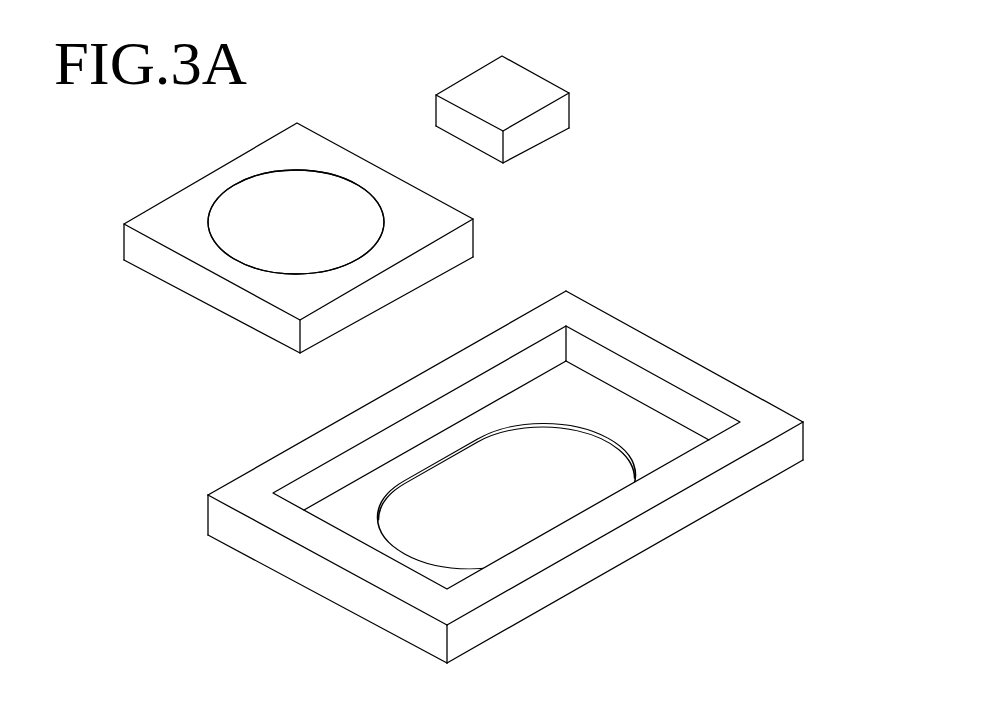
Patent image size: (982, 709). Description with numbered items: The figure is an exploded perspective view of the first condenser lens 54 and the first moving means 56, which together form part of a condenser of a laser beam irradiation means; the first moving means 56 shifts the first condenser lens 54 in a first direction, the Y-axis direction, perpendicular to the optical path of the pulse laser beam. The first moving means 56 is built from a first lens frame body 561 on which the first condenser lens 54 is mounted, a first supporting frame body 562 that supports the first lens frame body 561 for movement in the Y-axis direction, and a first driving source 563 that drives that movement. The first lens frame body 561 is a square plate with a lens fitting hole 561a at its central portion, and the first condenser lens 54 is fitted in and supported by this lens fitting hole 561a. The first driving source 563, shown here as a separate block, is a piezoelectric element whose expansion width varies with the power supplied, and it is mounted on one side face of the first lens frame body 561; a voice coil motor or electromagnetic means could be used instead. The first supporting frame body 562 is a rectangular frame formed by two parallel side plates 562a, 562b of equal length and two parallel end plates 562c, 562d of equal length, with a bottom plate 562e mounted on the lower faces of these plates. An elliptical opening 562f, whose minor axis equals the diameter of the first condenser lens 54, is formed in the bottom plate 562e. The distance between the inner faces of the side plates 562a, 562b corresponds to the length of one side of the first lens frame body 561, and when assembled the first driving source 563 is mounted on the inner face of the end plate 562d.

The first condenser lens 54 is at (342, 190).
The first moving means 56 is at (515, 465).
The first lens frame body 561 is at (433, 212).
The lens fitting hole 561a is at (345, 265).
The first supporting frame body 562 is at (515, 469).
The side plate 562a is at (288, 473).
The side plate 562b is at (603, 512).
The end plate 562c is at (372, 557).
The end plate 562d is at (747, 408).
The bottom plate 562e is at (627, 418).
The elliptical opening 562f is at (587, 472).
The first driving source 563 is at (527, 82).